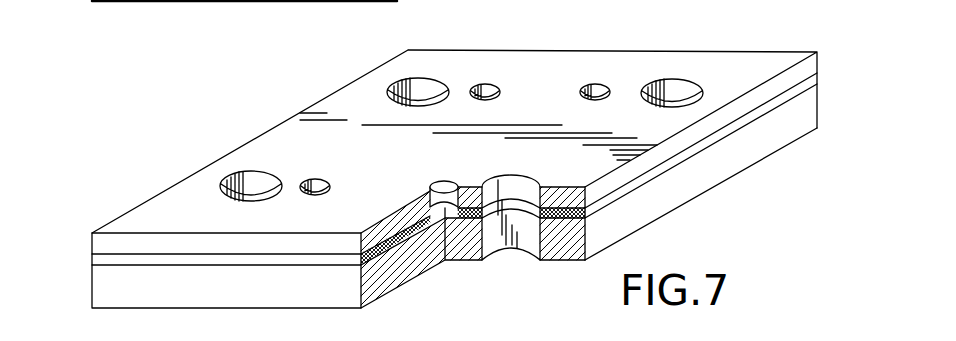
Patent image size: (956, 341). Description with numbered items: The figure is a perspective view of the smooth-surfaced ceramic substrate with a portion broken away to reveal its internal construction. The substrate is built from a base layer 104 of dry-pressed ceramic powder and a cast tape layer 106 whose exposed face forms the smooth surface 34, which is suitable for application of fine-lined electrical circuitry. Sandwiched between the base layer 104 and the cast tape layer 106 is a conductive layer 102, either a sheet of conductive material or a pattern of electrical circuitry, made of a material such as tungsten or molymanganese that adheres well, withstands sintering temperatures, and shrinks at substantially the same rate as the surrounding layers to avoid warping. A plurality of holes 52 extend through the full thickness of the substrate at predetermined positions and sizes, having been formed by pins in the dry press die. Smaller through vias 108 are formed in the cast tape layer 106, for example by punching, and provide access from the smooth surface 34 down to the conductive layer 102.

The smooth surface 34 is at (537, 81).
The holes 52 is at (258, 182).
The through vias 108 is at (316, 182).
The conductive layer 102 is at (672, 163).
The base layer 104 is at (622, 222).
The cast tape layer 106 is at (723, 120).